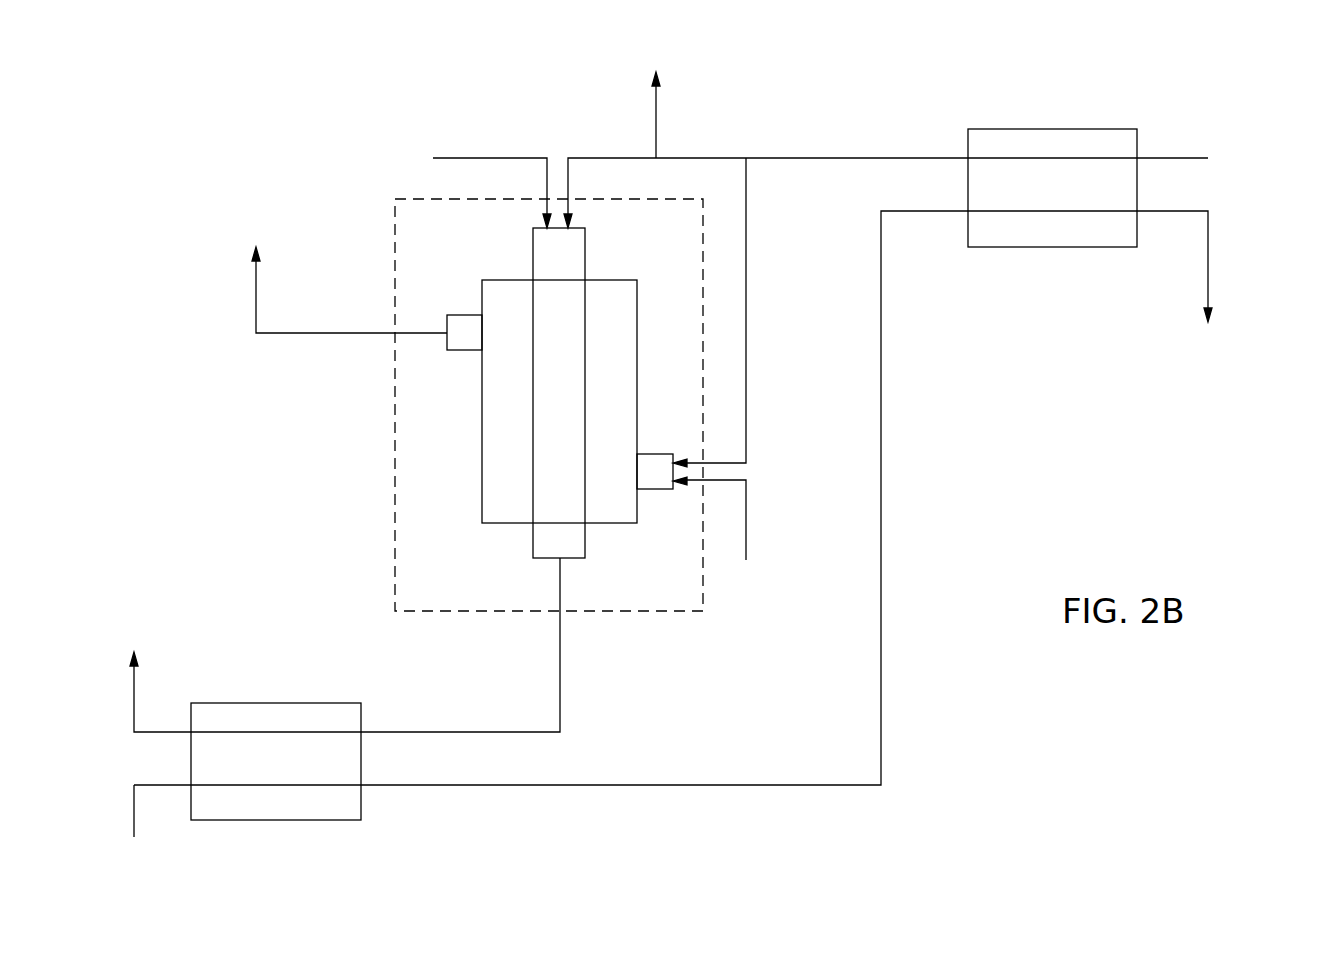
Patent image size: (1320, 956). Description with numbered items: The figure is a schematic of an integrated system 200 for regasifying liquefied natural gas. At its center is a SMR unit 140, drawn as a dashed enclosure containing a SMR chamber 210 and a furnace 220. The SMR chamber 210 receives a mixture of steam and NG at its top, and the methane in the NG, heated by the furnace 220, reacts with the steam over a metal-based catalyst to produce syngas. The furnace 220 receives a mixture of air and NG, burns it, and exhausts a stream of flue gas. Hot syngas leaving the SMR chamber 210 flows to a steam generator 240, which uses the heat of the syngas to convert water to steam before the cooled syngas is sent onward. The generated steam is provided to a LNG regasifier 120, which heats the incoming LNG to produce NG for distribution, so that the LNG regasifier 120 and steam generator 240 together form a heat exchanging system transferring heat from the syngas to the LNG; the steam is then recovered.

The integrated system 200 is at (1172, 59).
The LNG regasifier 120 is at (1025, 129).
The SMR unit 140 is at (394, 497).
The SMR chamber 210 is at (533, 258).
The furnace 220 is at (496, 525).
The steam generator 240 is at (313, 703).